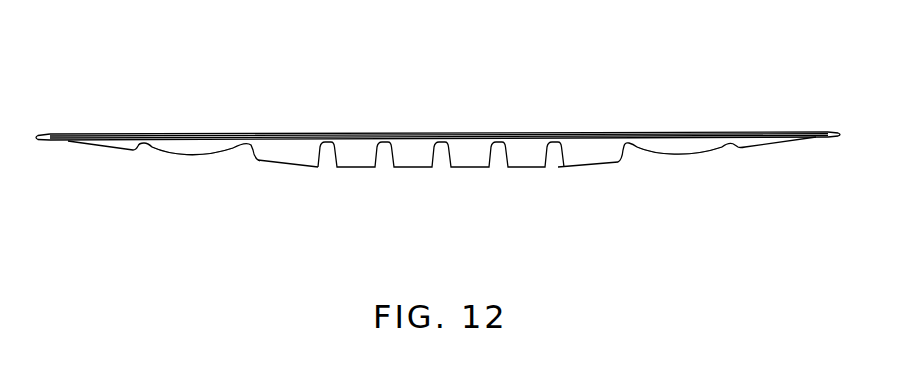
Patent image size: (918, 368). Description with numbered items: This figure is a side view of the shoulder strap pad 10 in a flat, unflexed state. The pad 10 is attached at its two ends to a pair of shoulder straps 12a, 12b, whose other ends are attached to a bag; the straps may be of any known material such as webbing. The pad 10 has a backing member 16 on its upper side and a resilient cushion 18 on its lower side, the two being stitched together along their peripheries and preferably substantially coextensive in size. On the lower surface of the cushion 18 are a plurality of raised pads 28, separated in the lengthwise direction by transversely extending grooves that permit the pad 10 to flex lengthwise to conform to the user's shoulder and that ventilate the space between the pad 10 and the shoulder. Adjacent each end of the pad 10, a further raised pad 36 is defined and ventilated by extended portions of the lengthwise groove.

The shoulder strap pad 10 is at (532, 92).
The shoulder strap 12a is at (41, 132).
The shoulder strap 12b is at (832, 130).
The backing member 16 is at (322, 132).
The resilient cushion 18 is at (276, 165).
The raised pads 28 is at (350, 168).
The further raised pad 36 is at (192, 153).